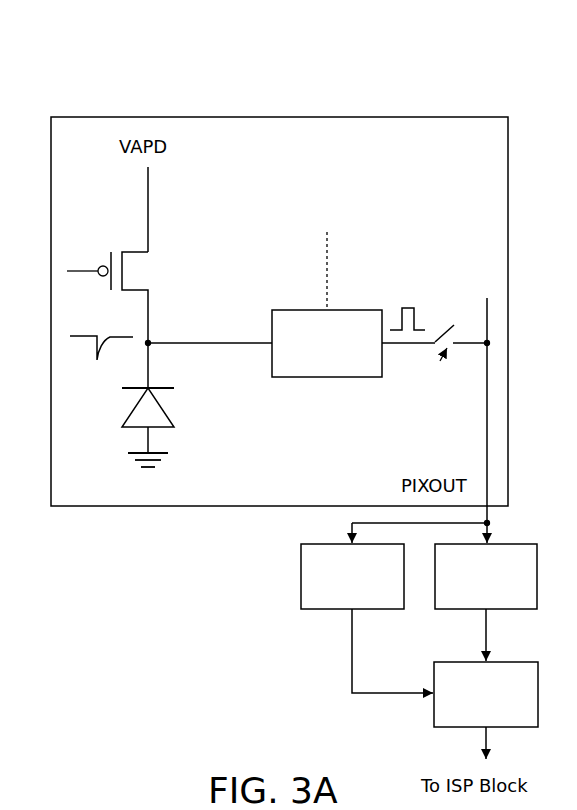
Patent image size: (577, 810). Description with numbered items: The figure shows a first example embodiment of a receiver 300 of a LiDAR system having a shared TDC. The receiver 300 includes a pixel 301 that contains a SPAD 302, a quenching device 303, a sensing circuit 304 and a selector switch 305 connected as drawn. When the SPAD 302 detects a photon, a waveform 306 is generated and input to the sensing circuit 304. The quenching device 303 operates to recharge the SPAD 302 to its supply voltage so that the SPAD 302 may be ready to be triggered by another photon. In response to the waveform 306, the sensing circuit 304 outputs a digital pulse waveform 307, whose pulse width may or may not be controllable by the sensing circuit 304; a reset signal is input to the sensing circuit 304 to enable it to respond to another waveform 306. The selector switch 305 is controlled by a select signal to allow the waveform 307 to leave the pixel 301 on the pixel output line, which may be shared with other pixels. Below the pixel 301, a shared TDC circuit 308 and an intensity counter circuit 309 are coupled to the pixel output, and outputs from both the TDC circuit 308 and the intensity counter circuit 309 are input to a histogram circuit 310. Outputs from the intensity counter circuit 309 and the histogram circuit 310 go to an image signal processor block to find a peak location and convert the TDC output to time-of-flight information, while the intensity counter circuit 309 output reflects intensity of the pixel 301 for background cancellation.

The receiver 300 is at (101, 81).
The pixel 301 is at (95, 508).
The SPAD 302 is at (160, 418).
The quenching device 303 is at (116, 284).
The sensing circuit 304 is at (304, 378).
The selector switch 305 is at (454, 320).
The waveform 306 is at (92, 371).
The digital pulse waveform 307 is at (402, 299).
The shared TDC circuit 308 is at (308, 610).
The intensity counter circuit 309 is at (446, 610).
The histogram circuit 310 is at (446, 728).